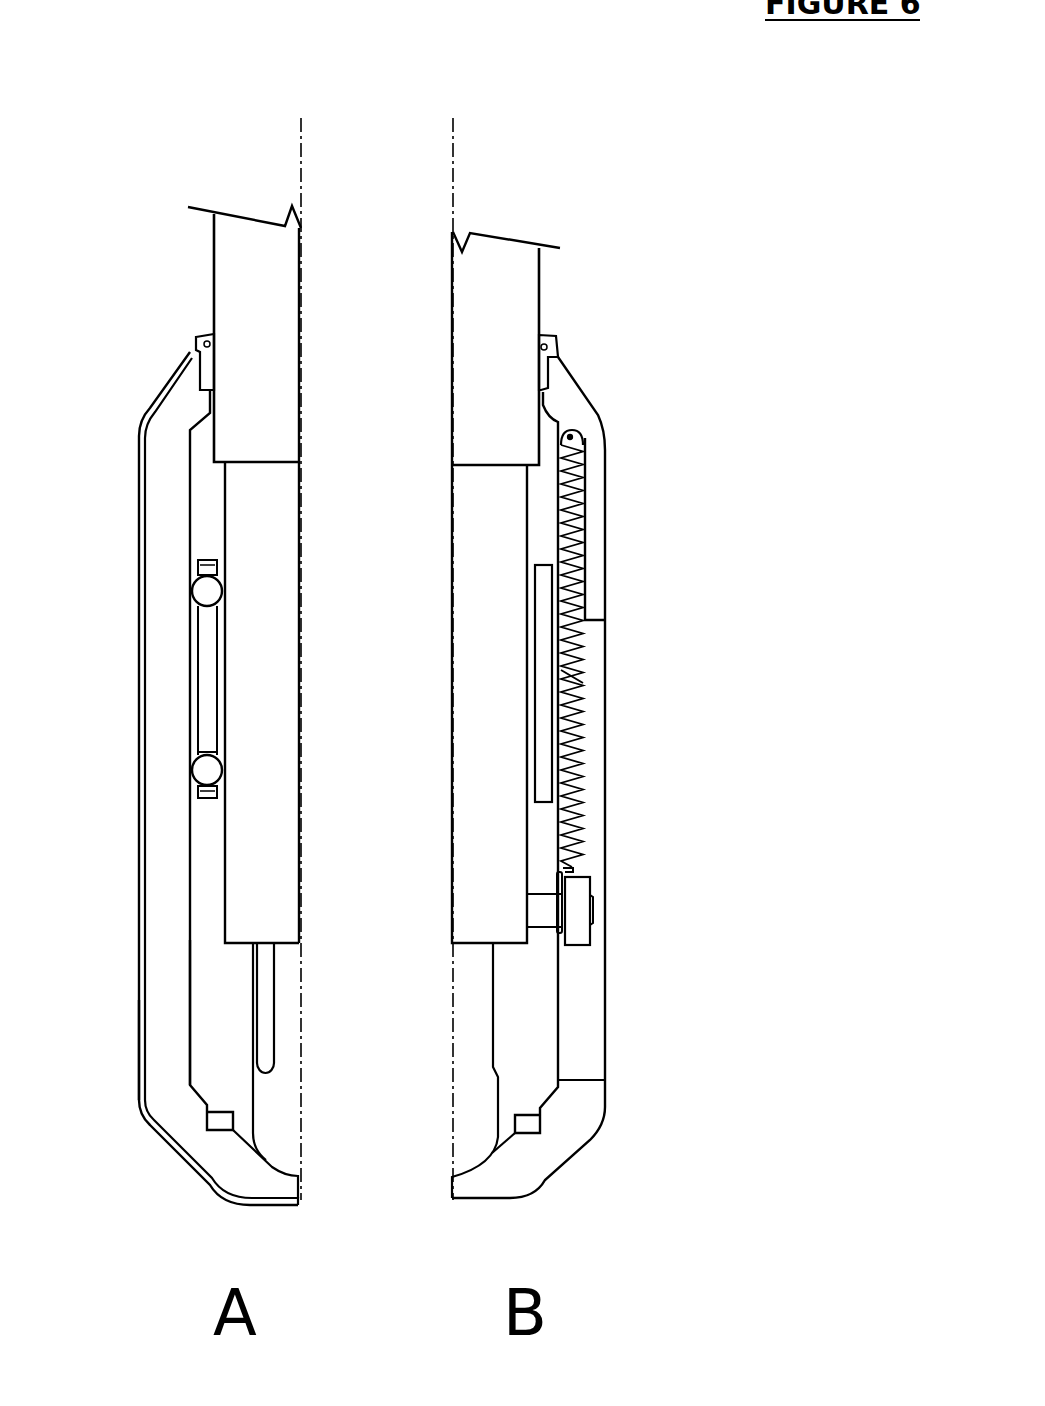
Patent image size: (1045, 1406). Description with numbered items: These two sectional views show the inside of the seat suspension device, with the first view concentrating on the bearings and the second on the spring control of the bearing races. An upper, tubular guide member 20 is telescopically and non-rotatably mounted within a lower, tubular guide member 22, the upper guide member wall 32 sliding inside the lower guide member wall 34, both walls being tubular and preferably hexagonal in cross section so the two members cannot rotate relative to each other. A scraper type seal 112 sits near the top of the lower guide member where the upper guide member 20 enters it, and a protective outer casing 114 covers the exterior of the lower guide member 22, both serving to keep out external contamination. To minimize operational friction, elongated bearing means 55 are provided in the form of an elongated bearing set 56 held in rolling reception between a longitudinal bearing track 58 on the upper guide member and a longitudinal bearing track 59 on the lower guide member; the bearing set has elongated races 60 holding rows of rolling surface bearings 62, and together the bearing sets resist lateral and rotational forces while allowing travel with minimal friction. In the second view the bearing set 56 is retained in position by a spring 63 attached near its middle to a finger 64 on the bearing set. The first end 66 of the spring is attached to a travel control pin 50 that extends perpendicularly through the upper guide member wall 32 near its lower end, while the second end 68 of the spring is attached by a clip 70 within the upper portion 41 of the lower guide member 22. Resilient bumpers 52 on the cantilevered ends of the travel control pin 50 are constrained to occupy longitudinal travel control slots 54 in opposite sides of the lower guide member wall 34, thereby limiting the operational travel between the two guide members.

In FIG. 6A, the upper guide member 20 is at (214, 270).
In FIG. 6A, the scraper type seal 112 is at (193, 337).
In FIG. 6A, the upper portion of the lower guide member 41 is at (140, 447).
In FIG. 6A, the longitudinal bearing track 59 is at (188, 468).
In FIG. 6A, the lower guide member 22 is at (141, 543).
In FIG. 6A, the rolling surface bearings 62 is at (207, 591).
In FIG. 6A, the elongated bearing means 55 is at (190, 667).
In FIG. 6A, the elongated races 60 is at (203, 752).
In FIG. 6A, the longitudinal bearing track 58 is at (225, 837).
In FIG. 6A, the upper guide member wall 32 is at (228, 890).
In FIG. 6A, the lower guide member wall 34 is at (188, 952).
In FIG. 6A, the protective outer casing 114 is at (139, 1043).
In FIG. 6B, the clip 70 is at (583, 433).
In FIG. 6B, the second end of the spring 68 is at (585, 470).
In FIG. 6B, the spring 63 is at (582, 518).
In FIG. 6B, the finger 64 is at (573, 677).
In FIG. 6B, the bearing set 56 is at (542, 733).
In FIG. 6B, the first end of the spring 66 is at (573, 862).
In FIG. 6B, the travel control pin 50 is at (594, 910).
In FIG. 6B, the resilient bumpers 52 is at (577, 942).
In FIG. 6B, the travel control slots 54 is at (583, 1080).